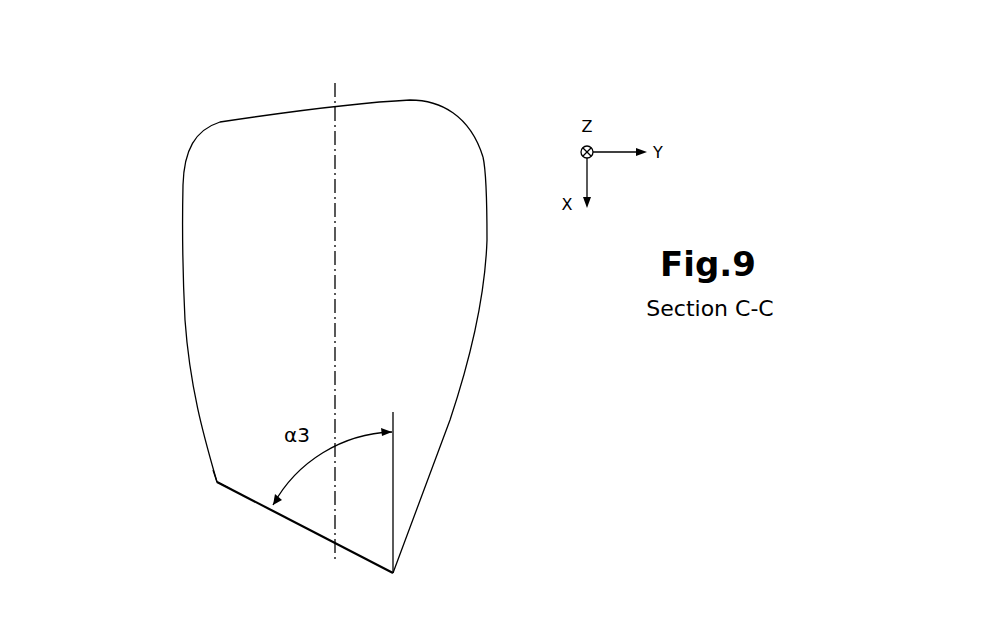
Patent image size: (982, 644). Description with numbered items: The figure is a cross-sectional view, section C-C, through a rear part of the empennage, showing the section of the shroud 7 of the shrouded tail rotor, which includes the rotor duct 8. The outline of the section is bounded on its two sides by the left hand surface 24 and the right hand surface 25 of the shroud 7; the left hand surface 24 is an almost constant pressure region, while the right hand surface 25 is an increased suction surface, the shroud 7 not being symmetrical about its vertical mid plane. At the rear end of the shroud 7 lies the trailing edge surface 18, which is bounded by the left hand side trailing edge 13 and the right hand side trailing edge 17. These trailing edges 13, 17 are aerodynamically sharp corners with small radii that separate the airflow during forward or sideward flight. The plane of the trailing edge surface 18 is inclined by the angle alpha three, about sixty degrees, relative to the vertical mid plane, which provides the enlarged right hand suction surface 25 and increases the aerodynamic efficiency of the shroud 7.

The shroud 7 is at (126, 233).
The rotor duct 8 is at (283, 113).
The left hand side trailing edge 13 is at (217, 482).
The right hand side trailing edge 17 is at (394, 577).
The trailing edge surface 18 is at (302, 523).
The left hand surface 24 is at (179, 385).
The right hand surface 25 is at (470, 391).